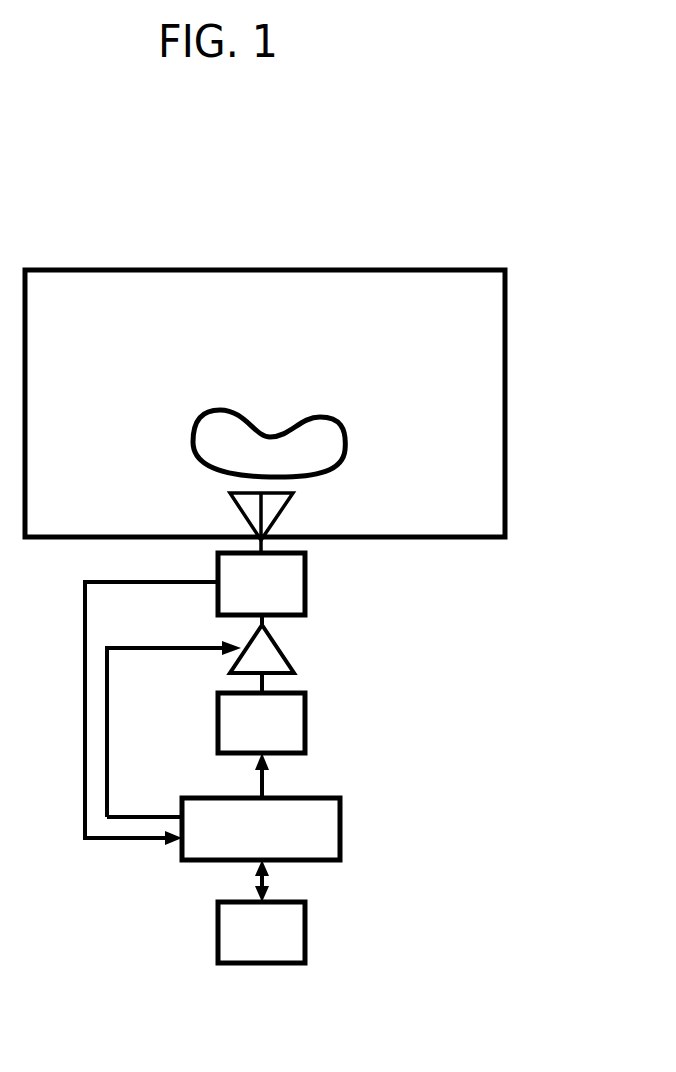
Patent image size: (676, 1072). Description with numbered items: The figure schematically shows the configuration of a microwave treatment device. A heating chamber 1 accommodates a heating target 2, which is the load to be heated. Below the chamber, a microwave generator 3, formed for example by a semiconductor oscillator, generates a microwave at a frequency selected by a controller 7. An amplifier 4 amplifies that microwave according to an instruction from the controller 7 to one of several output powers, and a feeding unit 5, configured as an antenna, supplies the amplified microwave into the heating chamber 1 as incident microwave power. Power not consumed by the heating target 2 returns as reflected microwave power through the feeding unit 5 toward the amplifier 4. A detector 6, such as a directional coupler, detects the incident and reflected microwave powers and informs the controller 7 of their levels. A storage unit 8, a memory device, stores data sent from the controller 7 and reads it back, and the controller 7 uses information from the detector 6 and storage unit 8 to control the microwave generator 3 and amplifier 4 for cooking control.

The heating chamber 1 is at (505, 298).
The heating target 2 is at (345, 450).
The microwave generator 3 is at (305, 727).
The amplifier 4 is at (277, 648).
The feeding unit 5 is at (240, 515).
The detector 6 is at (305, 588).
The controller 7 is at (340, 828).
The storage unit 8 is at (305, 932).